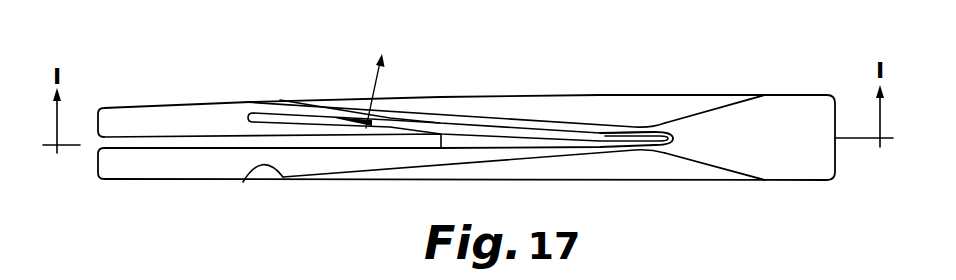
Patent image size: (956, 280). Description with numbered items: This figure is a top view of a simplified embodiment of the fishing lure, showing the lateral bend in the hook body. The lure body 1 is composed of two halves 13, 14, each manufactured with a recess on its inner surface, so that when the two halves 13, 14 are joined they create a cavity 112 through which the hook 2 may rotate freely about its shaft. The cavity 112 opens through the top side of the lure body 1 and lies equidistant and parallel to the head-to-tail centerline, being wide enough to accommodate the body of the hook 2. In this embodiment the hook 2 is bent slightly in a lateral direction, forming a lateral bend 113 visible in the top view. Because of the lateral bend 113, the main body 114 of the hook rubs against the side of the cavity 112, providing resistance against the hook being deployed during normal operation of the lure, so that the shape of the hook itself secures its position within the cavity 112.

The lure body 1 is at (743, 149).
The hook 2 is at (251, 117).
The lure body half 13 is at (473, 97).
The lure body half 14 is at (372, 183).
The cavity 112 is at (243, 182).
The lateral bend 113 is at (583, 130).
The main body of the hook 114 is at (367, 88).